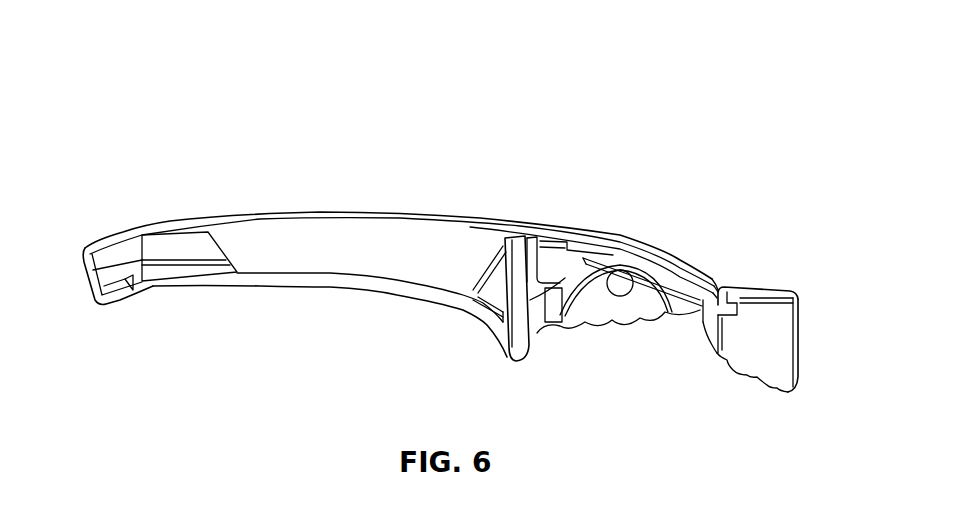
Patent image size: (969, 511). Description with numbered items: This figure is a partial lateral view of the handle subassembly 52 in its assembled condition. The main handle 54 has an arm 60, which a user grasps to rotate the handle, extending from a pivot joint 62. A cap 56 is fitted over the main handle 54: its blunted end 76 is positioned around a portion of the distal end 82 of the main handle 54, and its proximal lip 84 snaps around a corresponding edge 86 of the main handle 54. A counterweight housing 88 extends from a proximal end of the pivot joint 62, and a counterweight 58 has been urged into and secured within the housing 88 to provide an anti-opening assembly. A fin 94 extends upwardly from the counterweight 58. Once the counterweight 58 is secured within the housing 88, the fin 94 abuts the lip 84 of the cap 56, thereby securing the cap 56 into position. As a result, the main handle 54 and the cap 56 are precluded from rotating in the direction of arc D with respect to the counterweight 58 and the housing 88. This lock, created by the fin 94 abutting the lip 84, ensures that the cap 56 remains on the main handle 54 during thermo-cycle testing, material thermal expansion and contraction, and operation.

The handle subassembly 52 is at (153, 68).
The main handle 54 is at (460, 303).
The cap 56 is at (363, 212).
The counterweight 58 is at (765, 284).
The arm 60 is at (247, 290).
The pivot joint 62 is at (623, 312).
The blunted end 76 is at (92, 298).
The distal end 82 is at (156, 288).
The proximal lip 84 is at (718, 283).
The corresponding edge 86 is at (694, 270).
The counterweight housing 88 is at (804, 340).
The fin 94 is at (741, 287).
The arc D is at (730, 137).